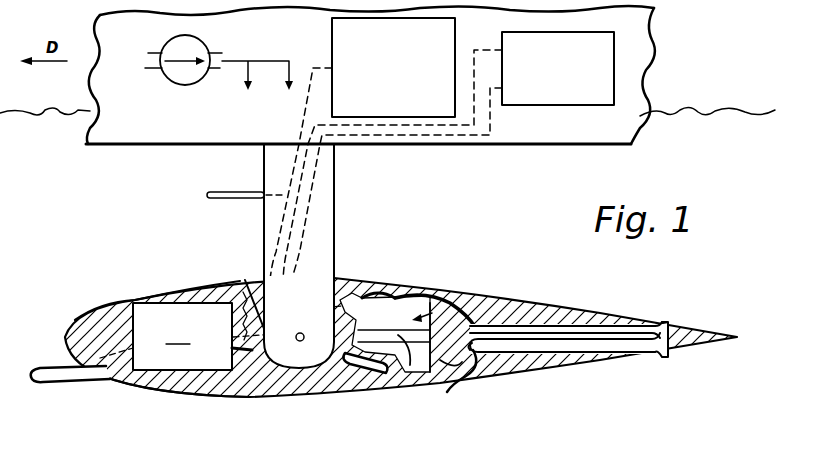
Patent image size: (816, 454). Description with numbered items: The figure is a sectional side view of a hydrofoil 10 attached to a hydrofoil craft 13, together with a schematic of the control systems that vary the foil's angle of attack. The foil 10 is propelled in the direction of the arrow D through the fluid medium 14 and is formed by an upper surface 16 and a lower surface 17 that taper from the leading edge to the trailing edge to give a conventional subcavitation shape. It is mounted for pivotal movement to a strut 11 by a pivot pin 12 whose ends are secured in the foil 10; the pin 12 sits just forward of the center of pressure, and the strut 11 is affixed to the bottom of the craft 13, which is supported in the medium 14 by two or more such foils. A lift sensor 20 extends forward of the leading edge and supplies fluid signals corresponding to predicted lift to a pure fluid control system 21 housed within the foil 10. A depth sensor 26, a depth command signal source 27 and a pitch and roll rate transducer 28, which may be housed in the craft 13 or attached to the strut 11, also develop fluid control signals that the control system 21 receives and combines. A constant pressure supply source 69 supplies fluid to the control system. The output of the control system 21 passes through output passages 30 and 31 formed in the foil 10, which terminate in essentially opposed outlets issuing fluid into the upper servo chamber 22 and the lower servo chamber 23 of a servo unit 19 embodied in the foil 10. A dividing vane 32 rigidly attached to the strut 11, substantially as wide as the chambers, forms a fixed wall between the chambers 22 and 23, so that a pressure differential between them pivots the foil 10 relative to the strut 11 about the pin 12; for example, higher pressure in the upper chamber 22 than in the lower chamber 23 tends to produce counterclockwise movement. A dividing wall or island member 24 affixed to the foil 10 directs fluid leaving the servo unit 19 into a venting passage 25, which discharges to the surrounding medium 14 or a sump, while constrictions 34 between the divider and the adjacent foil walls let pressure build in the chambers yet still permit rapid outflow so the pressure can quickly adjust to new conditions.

The hydrofoil 10 is at (570, 300).
The strut 11 is at (334, 193).
The pivot pin 12 is at (262, 397).
The craft 13 is at (509, 148).
The fluid medium 14 is at (693, 103).
The upper surface 16 is at (130, 298).
The lower surface 17 is at (148, 390).
The servo unit 19 is at (462, 295).
The lift sensor 20 is at (42, 384).
The pure fluid control system 21 is at (182, 336).
The upper servo chamber 22 is at (410, 293).
The lower servo chamber 23 is at (458, 385).
The dividing wall 24 is at (462, 363).
The venting passage 25 is at (565, 338).
The depth sensor 26 is at (209, 199).
The depth command signal source 27 is at (332, 42).
The pitch and roll rate transducer 28 is at (591, 28).
The output passage 30 is at (388, 293).
The output passage 31 is at (333, 395).
The dividing vane 32 is at (400, 347).
The constrictions 34 is at (507, 305).
The constant pressure supply source 69 is at (158, 84).